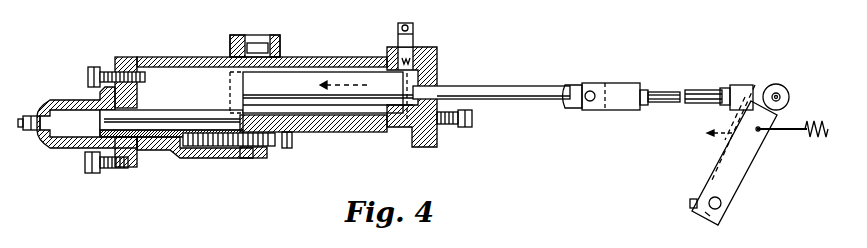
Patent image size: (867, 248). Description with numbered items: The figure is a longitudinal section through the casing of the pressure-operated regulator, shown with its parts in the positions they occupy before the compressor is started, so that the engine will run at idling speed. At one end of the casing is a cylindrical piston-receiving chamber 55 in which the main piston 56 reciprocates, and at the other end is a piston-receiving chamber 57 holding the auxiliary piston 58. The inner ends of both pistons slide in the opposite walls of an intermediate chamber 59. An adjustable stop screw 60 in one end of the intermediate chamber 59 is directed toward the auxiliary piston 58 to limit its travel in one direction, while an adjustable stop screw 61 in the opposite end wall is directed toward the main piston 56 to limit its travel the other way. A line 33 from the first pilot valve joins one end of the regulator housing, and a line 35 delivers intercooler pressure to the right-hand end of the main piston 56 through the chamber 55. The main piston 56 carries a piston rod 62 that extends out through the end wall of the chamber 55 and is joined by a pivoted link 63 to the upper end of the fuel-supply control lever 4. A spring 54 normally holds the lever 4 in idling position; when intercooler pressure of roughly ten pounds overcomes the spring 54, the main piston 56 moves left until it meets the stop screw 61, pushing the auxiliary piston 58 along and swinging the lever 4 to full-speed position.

The fuel-supply control lever 4 is at (737, 177).
The line 33 is at (32, 118).
The line 35 is at (413, 31).
The spring 54 is at (770, 130).
The cylindrical piston-receiving chamber 55 is at (382, 128).
The main piston 56 is at (306, 122).
The piston-receiving chamber 57 is at (78, 148).
The auxiliary piston 58 is at (155, 118).
The intermediate chamber 59 is at (182, 73).
The adjustable stop screw 60 is at (235, 148).
The adjustable stop screw 61 is at (143, 82).
The piston rod 62 is at (505, 96).
The pivoted link 63 is at (697, 97).